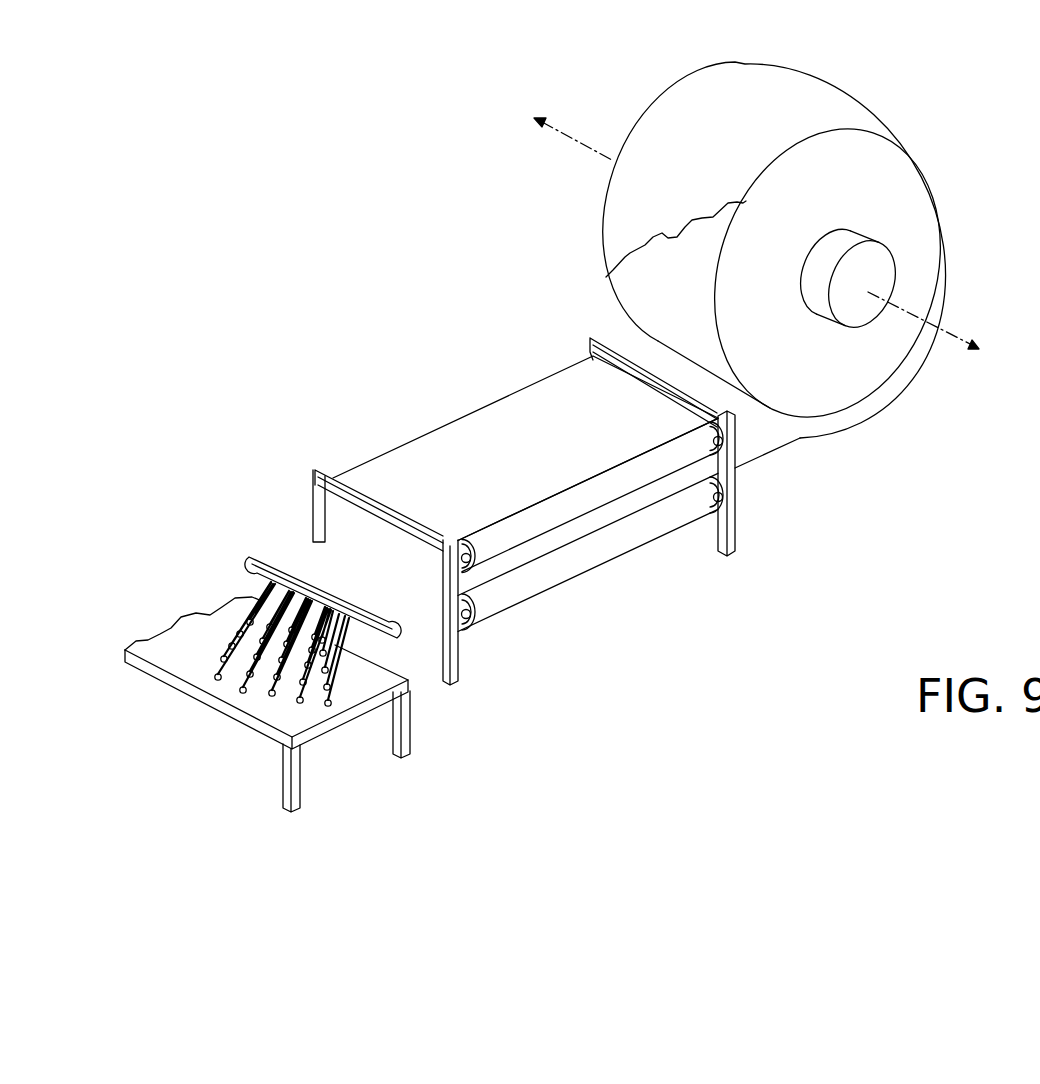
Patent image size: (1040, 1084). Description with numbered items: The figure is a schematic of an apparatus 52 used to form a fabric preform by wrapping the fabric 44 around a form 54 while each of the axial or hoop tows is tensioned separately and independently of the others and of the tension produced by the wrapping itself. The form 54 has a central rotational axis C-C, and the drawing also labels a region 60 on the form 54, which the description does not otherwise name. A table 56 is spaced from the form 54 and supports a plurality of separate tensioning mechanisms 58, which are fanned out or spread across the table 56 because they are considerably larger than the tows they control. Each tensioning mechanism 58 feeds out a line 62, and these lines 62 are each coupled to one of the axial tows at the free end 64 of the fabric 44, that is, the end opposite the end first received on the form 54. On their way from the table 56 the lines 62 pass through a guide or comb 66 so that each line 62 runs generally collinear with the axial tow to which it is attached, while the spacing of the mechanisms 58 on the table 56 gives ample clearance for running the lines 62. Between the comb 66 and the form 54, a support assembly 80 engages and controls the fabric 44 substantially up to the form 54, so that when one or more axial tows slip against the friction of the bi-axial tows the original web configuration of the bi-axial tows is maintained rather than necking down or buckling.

The apparatus 52 is at (495, 258).
The form 54 is at (890, 192).
The cylindrical surface of roll 60 is at (681, 305).
The fabric 44 is at (768, 440).
The support assembly 80 is at (741, 536).
The free end 64 is at (285, 548).
The guide or comb 66 is at (405, 624).
The line 62 is at (343, 697).
The tensioning mechanisms 58 is at (245, 617).
The table 56 is at (228, 689).